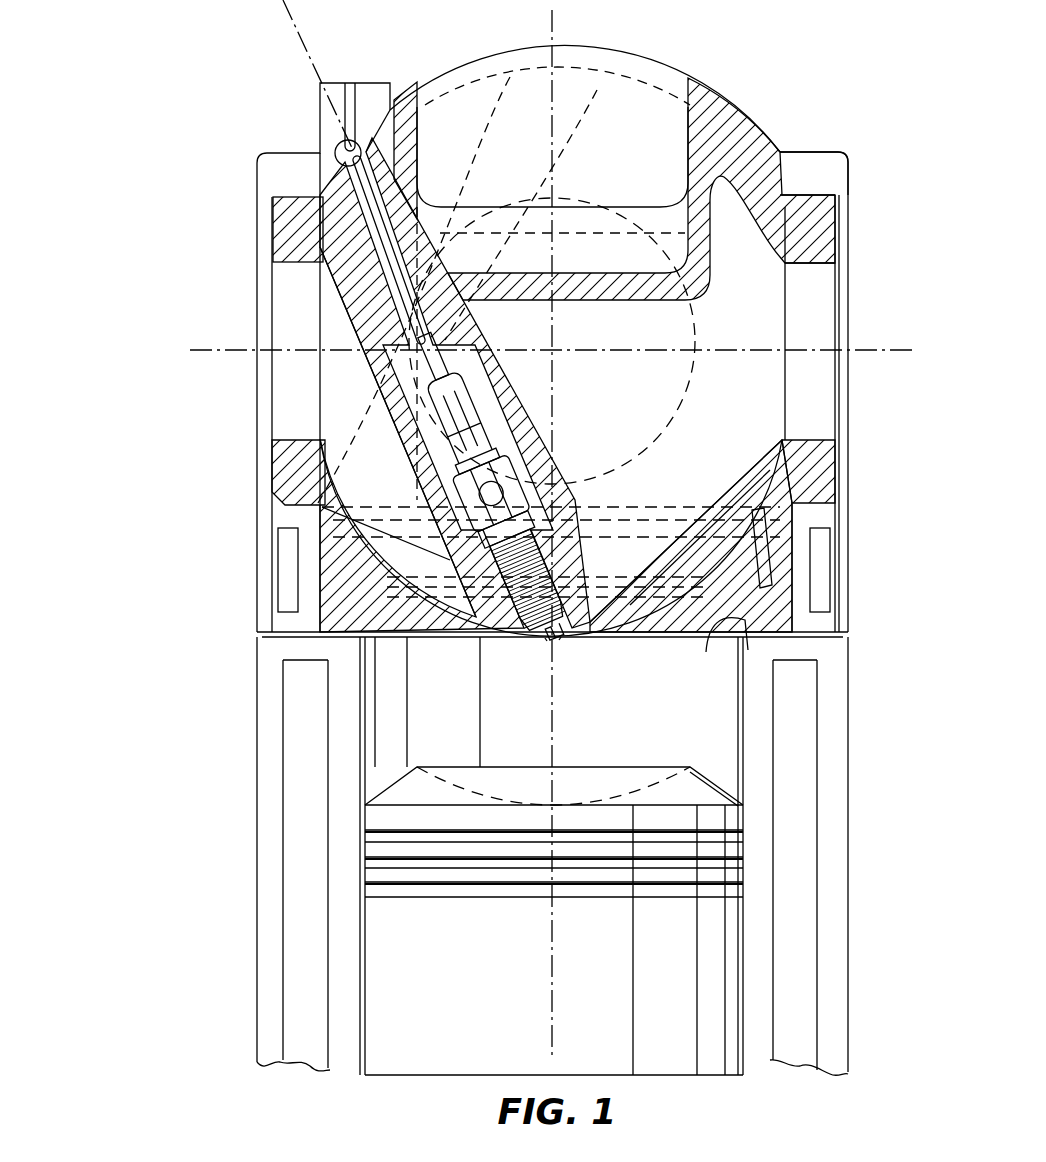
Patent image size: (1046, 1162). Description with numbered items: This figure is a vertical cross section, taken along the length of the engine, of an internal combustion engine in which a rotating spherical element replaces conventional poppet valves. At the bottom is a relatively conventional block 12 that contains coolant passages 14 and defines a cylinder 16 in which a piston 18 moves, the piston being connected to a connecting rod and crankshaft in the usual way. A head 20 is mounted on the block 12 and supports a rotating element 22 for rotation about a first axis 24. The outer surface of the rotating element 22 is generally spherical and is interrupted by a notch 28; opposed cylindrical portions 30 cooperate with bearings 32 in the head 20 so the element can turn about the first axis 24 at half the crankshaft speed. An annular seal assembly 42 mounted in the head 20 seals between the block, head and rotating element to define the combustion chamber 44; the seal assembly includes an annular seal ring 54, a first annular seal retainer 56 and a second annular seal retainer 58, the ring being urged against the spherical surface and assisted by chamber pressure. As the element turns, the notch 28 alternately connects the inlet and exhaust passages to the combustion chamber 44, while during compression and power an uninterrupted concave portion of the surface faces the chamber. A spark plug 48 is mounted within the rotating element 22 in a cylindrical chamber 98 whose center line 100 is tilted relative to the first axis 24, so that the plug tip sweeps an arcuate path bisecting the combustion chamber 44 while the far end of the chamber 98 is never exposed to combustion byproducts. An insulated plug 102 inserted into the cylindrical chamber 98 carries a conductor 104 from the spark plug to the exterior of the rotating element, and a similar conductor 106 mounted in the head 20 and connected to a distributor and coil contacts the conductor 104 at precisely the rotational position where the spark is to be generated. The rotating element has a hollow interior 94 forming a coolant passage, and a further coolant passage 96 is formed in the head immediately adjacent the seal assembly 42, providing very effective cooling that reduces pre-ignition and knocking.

The block 12 is at (258, 700).
The coolant passages 14 is at (778, 733).
The cylinder 16 is at (628, 733).
The piston 18 is at (395, 792).
The head 20 is at (603, 46).
The rotating element 22 is at (740, 132).
The first axis 24 is at (716, 350).
The notch 28 is at (678, 104).
The cylindrical portions 30 is at (828, 219).
The bearings 32 is at (810, 165).
The annular seal assembly 42 is at (712, 627).
The combustion chamber 44 is at (432, 733).
The spark plug 48 is at (494, 486).
The annular seal ring 54 is at (775, 552).
The first annular seal retainer 56 is at (772, 572).
The second annular seal retainer 58 is at (790, 592).
The hollow interior 94 is at (703, 446).
The coolant passage 96 is at (283, 555).
The cylindrical chamber 98 is at (400, 440).
The center line 100 is at (302, 34).
The insulated plug 102 is at (393, 181).
The conductor 104 is at (373, 218).
The conductor 106 is at (357, 88).